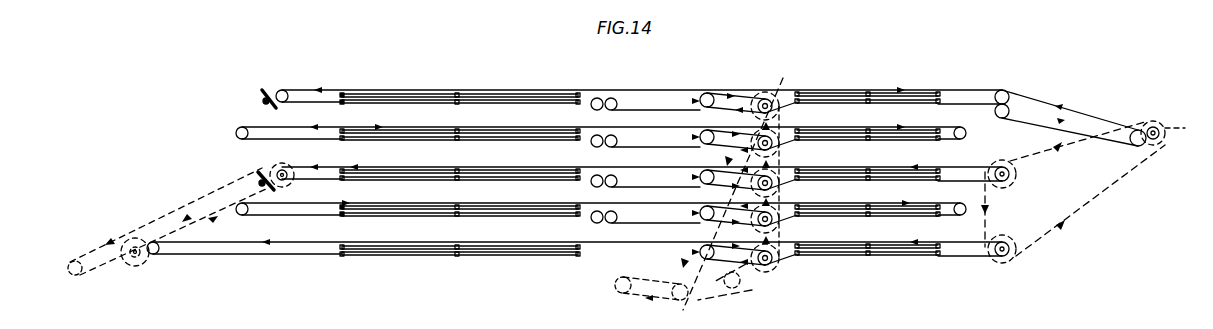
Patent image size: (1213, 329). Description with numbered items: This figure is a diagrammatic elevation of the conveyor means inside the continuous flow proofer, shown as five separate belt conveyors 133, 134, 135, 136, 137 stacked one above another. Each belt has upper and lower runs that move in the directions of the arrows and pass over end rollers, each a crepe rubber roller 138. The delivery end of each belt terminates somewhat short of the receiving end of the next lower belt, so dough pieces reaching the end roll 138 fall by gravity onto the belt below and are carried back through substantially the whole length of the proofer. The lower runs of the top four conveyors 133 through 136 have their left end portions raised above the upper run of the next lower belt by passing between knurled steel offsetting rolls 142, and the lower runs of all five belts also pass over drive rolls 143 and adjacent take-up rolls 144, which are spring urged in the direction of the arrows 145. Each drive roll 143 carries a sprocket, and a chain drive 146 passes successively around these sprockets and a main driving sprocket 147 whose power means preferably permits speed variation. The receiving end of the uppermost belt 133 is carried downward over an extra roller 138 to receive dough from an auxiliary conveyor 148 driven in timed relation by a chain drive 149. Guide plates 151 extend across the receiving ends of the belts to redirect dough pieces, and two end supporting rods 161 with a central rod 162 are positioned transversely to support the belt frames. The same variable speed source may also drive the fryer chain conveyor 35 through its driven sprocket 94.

The belt conveyor 133 is at (460, 93).
The belt conveyor 134 is at (448, 130).
The belt conveyor 135 is at (448, 168).
The belt conveyor 136 is at (430, 205).
The belt conveyor 137 is at (372, 258).
The crepe rubber roller 138 is at (285, 92).
The knurled steel offsetting rolls 142 is at (612, 99).
The drive roll 143 is at (786, 80).
The take-up roll 144 is at (699, 177).
The arrows 145 is at (699, 137).
The chain drive 146 is at (742, 286).
The main driving sprocket 147 is at (692, 296).
The auxiliary conveyor 148 is at (1180, 160).
The chain drive 149 is at (1042, 240).
The guide plate 151 is at (258, 98).
The end supporting rod 161 is at (345, 93).
The centrally located rod 162 is at (456, 94).
The chain conveyor 35 is at (85, 252).
The driven sprocket 94 is at (614, 285).